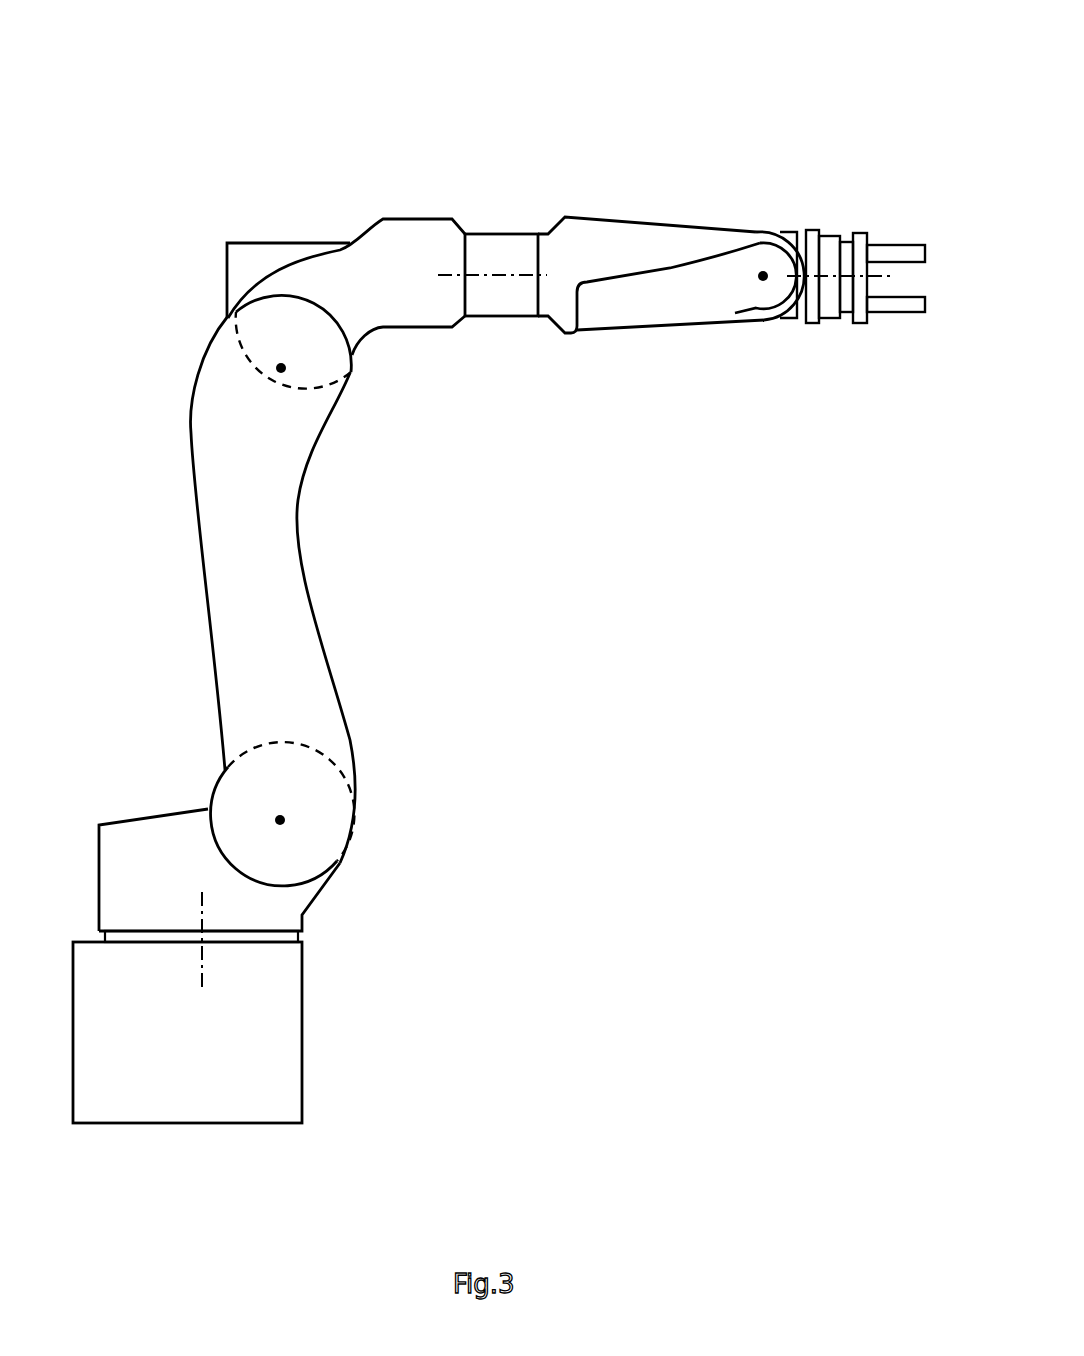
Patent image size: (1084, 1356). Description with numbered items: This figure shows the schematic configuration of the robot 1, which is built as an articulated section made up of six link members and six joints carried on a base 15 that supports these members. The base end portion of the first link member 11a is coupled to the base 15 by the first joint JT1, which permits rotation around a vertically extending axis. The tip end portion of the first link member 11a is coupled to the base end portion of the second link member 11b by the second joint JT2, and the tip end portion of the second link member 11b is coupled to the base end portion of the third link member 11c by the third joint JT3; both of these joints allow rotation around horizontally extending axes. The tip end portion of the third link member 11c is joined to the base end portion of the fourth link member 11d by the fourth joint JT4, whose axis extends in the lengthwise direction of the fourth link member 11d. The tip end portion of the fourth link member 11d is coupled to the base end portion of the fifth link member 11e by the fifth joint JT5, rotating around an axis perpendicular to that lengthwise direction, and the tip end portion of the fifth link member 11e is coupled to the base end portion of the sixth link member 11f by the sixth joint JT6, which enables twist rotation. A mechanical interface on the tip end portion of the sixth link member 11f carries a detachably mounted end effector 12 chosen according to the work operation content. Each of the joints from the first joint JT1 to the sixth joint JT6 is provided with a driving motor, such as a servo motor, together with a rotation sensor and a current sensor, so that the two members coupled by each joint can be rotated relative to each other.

The robot 1 is at (503, 34).
The first link member 11a is at (138, 815).
The second link member 11b is at (210, 580).
The third link member 11c is at (360, 237).
The fourth link member 11d is at (652, 233).
The fifth link member 11e is at (812, 230).
The sixth link member 11f is at (847, 233).
The end effector 12 is at (893, 243).
The base 15 is at (302, 1033).
The first joint JT1 is at (305, 938).
The second joint JT2 is at (353, 842).
The third joint JT3 is at (210, 339).
The fourth joint JT4 is at (505, 228).
The fifth joint JT5 is at (763, 325).
The sixth joint JT6 is at (845, 322).